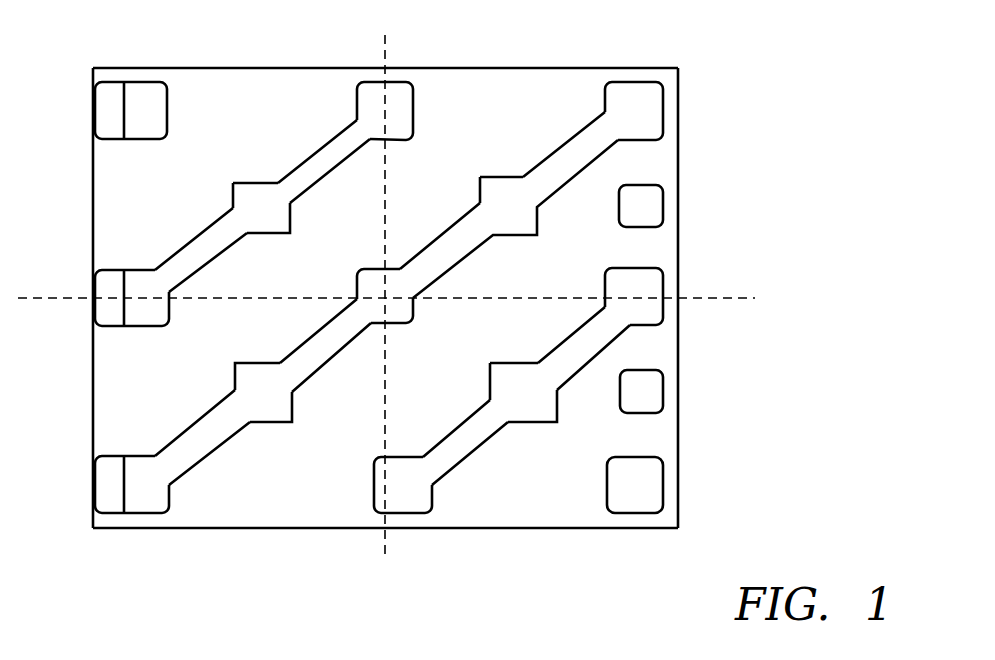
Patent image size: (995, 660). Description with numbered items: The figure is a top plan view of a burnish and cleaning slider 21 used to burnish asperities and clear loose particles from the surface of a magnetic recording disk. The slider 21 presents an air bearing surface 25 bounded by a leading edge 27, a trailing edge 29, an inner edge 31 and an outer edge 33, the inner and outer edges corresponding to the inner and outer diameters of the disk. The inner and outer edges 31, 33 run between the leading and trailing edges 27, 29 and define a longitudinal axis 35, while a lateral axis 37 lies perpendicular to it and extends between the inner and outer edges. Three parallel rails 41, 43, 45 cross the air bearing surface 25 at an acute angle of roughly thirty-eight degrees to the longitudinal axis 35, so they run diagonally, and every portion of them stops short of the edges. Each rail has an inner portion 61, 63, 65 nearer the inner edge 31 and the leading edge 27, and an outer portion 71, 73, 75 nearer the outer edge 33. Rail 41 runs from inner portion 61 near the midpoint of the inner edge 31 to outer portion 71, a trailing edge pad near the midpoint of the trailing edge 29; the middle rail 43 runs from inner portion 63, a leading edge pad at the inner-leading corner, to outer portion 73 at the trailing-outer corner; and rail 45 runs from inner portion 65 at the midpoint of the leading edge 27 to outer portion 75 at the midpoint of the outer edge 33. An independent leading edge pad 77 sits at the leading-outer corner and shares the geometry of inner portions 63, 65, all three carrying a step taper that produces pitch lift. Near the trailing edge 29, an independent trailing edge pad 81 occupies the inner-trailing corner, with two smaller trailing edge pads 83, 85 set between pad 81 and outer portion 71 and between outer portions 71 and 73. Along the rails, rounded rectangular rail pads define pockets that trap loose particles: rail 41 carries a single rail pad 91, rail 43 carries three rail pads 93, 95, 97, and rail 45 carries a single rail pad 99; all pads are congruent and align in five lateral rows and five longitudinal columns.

The slider 21 is at (777, 33).
The air bearing surface 25 is at (106, 428).
The leading edge 27 is at (83, 350).
The trailing edge 29 is at (694, 342).
The inner edge 31 is at (258, 538).
The outer edge 33 is at (162, 59).
The longitudinal axis 35 is at (728, 298).
The lateral axis 37 is at (386, 543).
The rail 41 is at (351, 477).
The rail 43 is at (184, 403).
The rail 45 is at (170, 233).
The inner portion 61 is at (415, 498).
The inner portion 63 is at (143, 500).
The inner portion 65 is at (138, 313).
The outer portion 71 is at (655, 275).
The outer portion 73 is at (655, 108).
The outer portion 75 is at (398, 97).
The leading edge pad 77 is at (158, 115).
The trailing edge pad 81 is at (655, 488).
The trailing edge pad 83 is at (655, 390).
The trailing edge pad 85 is at (655, 205).
The rail pad 91 is at (519, 380).
The rail pad 93 is at (249, 380).
The rail pad 95 is at (377, 284).
The rail pad 97 is at (505, 192).
The rail pad 99 is at (263, 197).